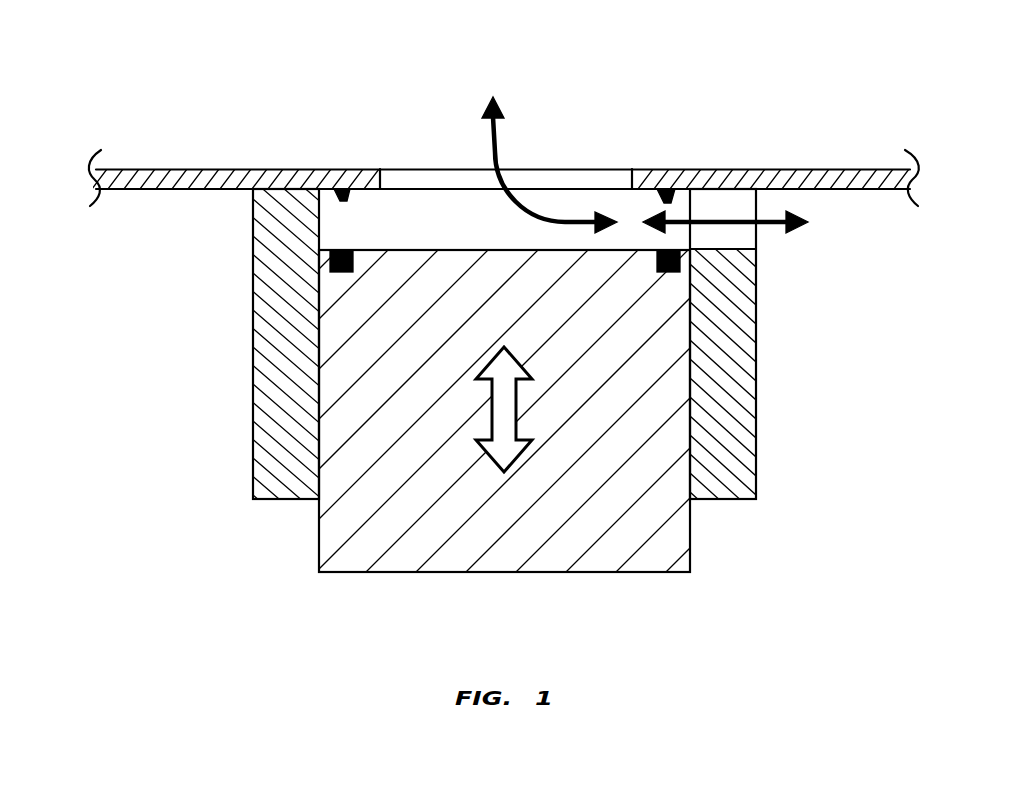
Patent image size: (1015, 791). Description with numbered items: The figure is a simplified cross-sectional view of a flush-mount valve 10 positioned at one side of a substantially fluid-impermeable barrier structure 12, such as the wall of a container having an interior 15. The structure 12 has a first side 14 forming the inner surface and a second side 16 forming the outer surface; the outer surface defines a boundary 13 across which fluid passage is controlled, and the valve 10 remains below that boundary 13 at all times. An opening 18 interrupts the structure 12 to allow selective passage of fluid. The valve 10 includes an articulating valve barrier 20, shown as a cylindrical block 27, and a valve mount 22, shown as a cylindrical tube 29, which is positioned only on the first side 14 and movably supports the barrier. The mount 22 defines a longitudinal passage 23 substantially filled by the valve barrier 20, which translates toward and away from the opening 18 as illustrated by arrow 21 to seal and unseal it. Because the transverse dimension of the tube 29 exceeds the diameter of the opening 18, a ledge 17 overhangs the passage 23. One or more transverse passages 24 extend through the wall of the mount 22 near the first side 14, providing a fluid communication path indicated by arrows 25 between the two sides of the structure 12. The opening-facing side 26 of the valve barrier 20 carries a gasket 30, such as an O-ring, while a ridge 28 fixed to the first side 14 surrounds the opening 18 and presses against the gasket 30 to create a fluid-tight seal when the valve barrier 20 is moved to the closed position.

The valve 10 is at (821, 391).
The barrier structure 12 is at (870, 168).
The boundary 13 is at (587, 164).
The first side 14 is at (860, 190).
The interior 15 is at (219, 412).
The second side 16 is at (700, 168).
The ledge 17 is at (373, 169).
The opening 18 is at (432, 180).
The valve barrier 20 is at (360, 555).
The arrow 21 is at (512, 415).
The valve mount 22 is at (263, 440).
The longitudinal passage 23 is at (330, 231).
The transverse passage 24 is at (752, 248).
The arrows 25 is at (490, 130).
The opening-facing side 26 is at (564, 249).
The cylindrical block 27 is at (442, 518).
The ridge 28 is at (325, 205).
The cylindrical tube 29 is at (757, 462).
The gasket 30 is at (357, 250).